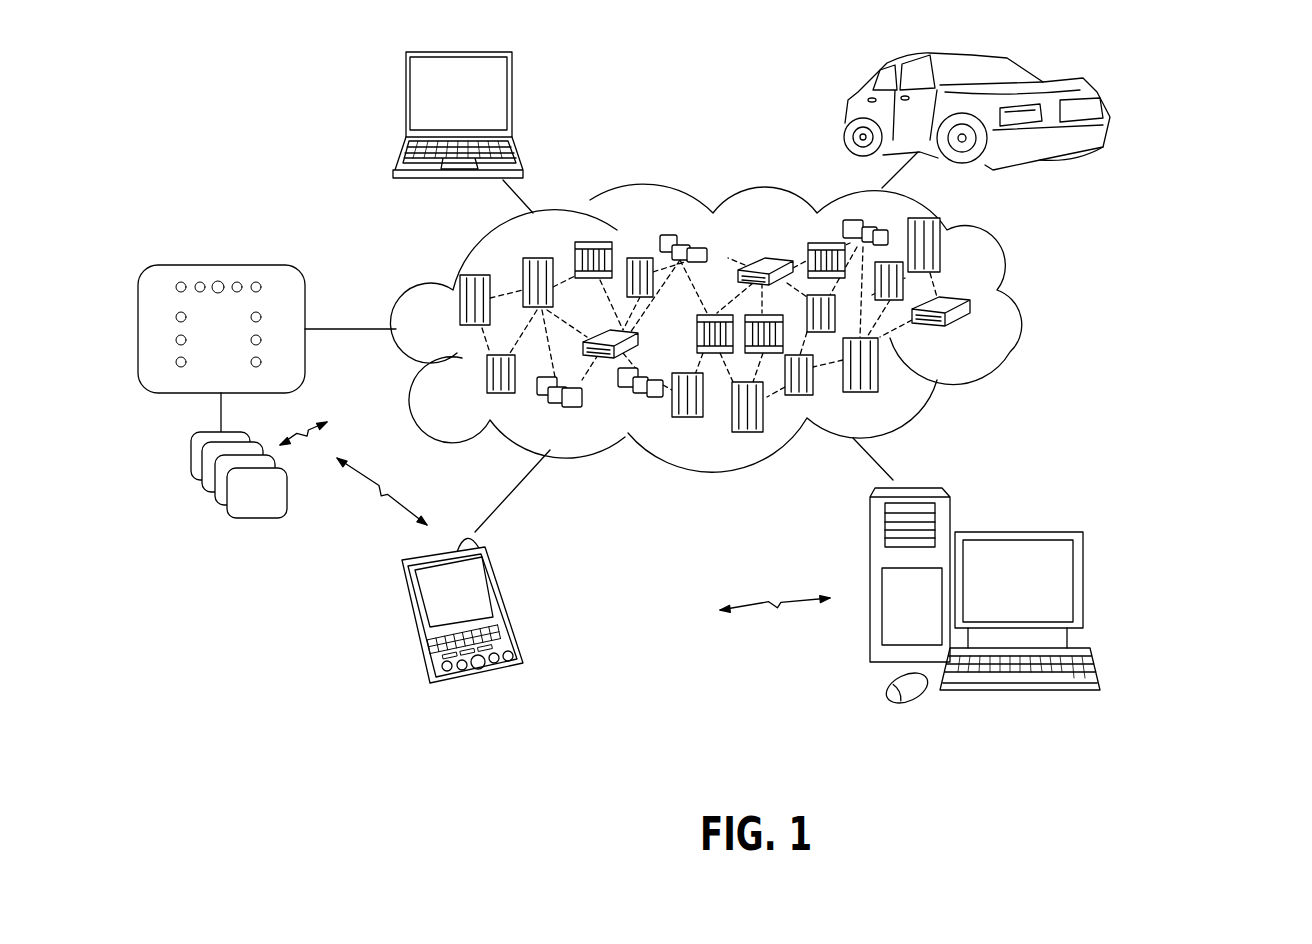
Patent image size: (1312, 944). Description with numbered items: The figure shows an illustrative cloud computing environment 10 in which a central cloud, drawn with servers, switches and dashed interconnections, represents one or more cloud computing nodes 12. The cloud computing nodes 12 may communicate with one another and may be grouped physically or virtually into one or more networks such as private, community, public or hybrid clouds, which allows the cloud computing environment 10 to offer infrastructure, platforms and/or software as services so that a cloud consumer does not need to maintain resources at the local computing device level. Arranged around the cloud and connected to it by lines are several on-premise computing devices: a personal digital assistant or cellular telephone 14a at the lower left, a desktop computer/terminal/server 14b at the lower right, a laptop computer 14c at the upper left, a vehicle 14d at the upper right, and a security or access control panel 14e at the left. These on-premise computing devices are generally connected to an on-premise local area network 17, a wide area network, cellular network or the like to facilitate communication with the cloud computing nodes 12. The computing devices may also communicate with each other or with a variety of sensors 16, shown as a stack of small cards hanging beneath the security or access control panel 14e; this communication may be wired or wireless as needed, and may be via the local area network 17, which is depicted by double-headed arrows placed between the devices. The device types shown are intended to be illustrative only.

The cloud computing environment 10 is at (1183, 217).
The cloud computing nodes 12 is at (973, 330).
The personal digital assistant or cellular telephone 14a is at (503, 606).
The desktop computer/terminal/server 14b is at (1020, 527).
The laptop computer 14c is at (515, 100).
The vehicle 14d is at (948, 111).
The security or access control panel 14e is at (302, 300).
The sensors 16 is at (217, 503).
The local area network 17 is at (307, 433).